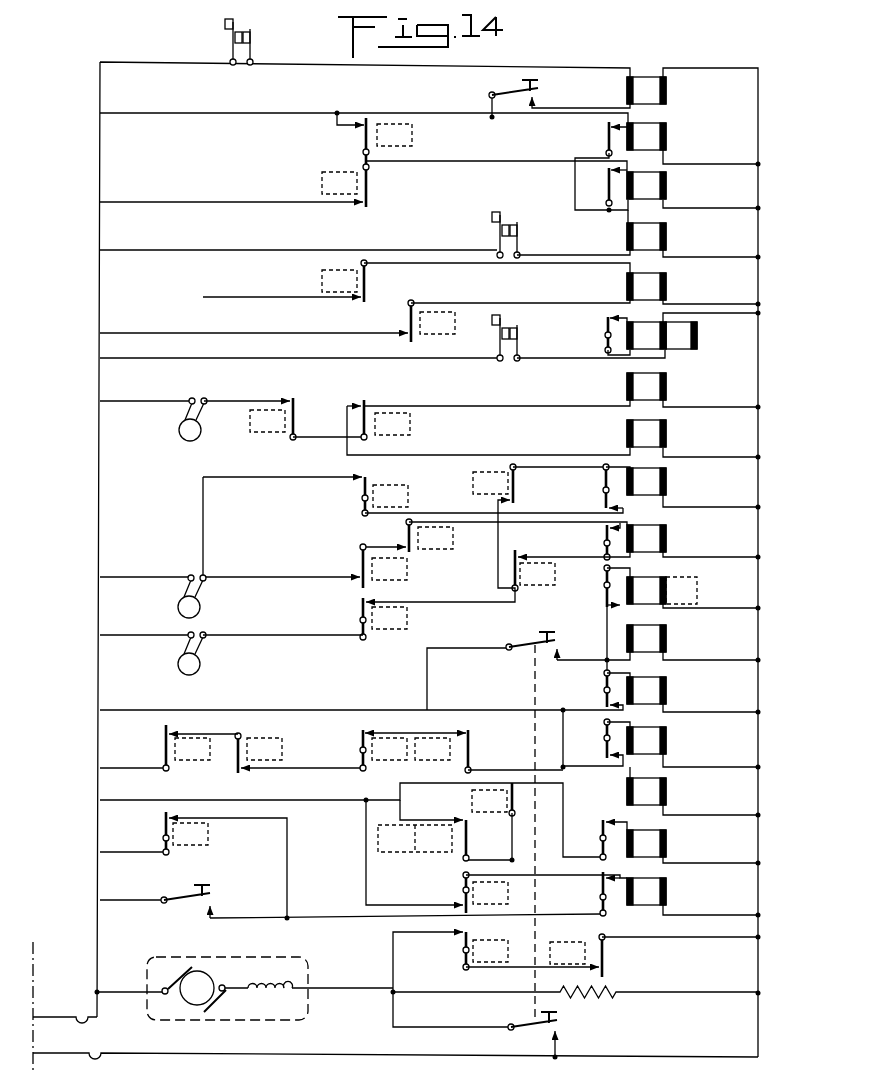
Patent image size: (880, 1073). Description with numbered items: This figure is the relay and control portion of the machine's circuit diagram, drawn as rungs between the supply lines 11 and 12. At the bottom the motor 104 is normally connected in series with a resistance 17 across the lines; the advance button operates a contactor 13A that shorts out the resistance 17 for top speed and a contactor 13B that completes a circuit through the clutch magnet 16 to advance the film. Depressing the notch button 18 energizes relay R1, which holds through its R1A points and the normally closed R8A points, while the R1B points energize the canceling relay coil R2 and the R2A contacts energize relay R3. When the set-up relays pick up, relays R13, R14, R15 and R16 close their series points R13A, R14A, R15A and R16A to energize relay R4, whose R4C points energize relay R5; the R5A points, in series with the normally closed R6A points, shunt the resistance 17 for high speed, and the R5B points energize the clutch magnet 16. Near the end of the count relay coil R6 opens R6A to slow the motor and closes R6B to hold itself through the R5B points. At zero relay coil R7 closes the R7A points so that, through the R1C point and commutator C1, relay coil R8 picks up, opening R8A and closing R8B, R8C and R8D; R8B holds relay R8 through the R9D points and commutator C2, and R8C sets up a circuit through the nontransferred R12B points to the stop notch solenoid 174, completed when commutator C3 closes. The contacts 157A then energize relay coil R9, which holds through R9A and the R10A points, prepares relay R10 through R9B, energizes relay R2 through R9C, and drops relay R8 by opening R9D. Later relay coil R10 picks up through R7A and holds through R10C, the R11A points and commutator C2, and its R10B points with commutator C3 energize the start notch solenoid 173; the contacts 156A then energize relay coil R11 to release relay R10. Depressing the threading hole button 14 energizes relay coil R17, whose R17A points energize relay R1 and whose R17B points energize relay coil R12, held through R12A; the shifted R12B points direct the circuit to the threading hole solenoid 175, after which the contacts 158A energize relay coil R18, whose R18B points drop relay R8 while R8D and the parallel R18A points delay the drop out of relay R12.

The threading hole solenoid contacts 158A is at (253, 46).
The threading hole button 14 is at (524, 82).
The relay coil R18 is at (668, 97).
The R18A points R18A is at (364, 139).
The R8D points R8D is at (368, 190).
The R17B points R17B is at (608, 140).
The relay coil R17 is at (668, 142).
The R12A points R12A is at (607, 188).
The relay coil R12 is at (668, 192).
The relay coil R8 is at (322, 183).
The contacts 156A is at (517, 240).
The relay coil R11 is at (668, 242).
The R10B points R10B is at (367, 288).
The start notch solenoid 173 is at (668, 290).
The R10A points R10A is at (410, 326).
The contacts 157A is at (517, 343).
The R9A points R9A is at (605, 333).
The relay coil R9 is at (699, 338).
The threading hole solenoid 175 is at (668, 390).
The commutator C3 is at (179, 433).
The R8C points R8C is at (295, 410).
The R12B points R12B is at (368, 408).
The stop notch solenoid 174 is at (668, 442).
The R11A points R11A is at (362, 498).
The R9B points R9B is at (516, 492).
The R10C points R10C is at (604, 500).
The relay coil R10 is at (668, 490).
The R9D points R9D is at (407, 536).
The R8B points R8B is at (604, 544).
The R1C point R1C is at (515, 552).
The relay R1 is at (553, 575).
The R18B points R18B is at (361, 567).
The commutator C2 is at (201, 606).
The R6B points R6B is at (604, 586).
The relay coil R6 is at (655, 579).
The R7A points R7A is at (361, 619).
The relay coil R7 is at (405, 619).
The commutator C1 is at (201, 664).
The contactor 13B is at (527, 636).
The clutch magnet 16 is at (668, 642).
The R5B points R5B is at (604, 690).
The relay R5 is at (668, 690).
The R4C points R4C is at (605, 739).
The relay R4 is at (668, 742).
The R13A points R13A is at (164, 750).
The relay R13 is at (188, 737).
The R14A points R14A is at (238, 766).
The relay R14 is at (262, 737).
The R15A points R15A is at (361, 752).
The relay R15 is at (382, 764).
The R16A points R16A is at (470, 751).
The relay R16 is at (452, 770).
The R1B points R1B is at (515, 795).
The relay R3 is at (668, 792).
The R2A contacts R2A is at (601, 840).
The relay coil R2 is at (668, 845).
The R17A points R17A is at (164, 837).
The R9C points R9C is at (468, 852).
The R8A points R8A is at (464, 889).
The R1A points R1A is at (600, 897).
The notch button 18 is at (190, 893).
The R6A points R6A is at (464, 953).
The R5A points R5A is at (605, 971).
The resistance 17 is at (612, 998).
The contactor 13A is at (565, 1023).
The motor 104 is at (308, 1018).
The line 11 is at (80, 1016).
The line 12 is at (100, 1050).